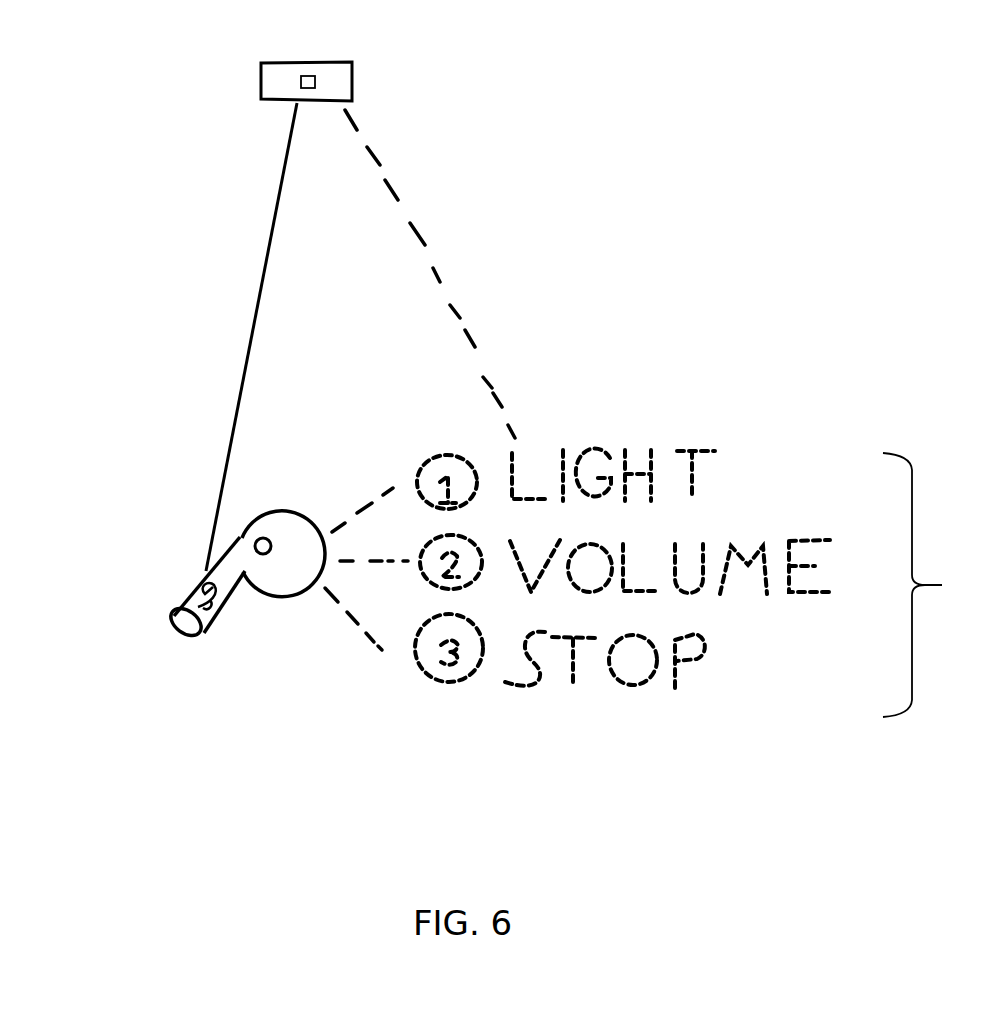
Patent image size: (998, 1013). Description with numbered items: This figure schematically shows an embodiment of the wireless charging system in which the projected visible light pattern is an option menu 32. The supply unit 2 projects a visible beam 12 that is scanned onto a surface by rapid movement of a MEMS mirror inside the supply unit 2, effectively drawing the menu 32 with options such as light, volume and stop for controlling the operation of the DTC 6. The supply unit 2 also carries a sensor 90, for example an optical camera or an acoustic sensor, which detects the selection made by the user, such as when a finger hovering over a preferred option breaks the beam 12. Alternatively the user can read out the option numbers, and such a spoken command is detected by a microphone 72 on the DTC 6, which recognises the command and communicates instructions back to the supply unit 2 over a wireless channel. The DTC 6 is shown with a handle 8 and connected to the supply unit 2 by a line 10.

The supply unit 2 is at (261, 81).
The sensor 90 is at (315, 80).
The connection line 10 is at (260, 277).
The visible beam 12 is at (425, 245).
The DTC 6 is at (231, 516).
The handle 8 is at (205, 590).
The microphone 72 is at (272, 543).
The option menu 32 is at (703, 582).